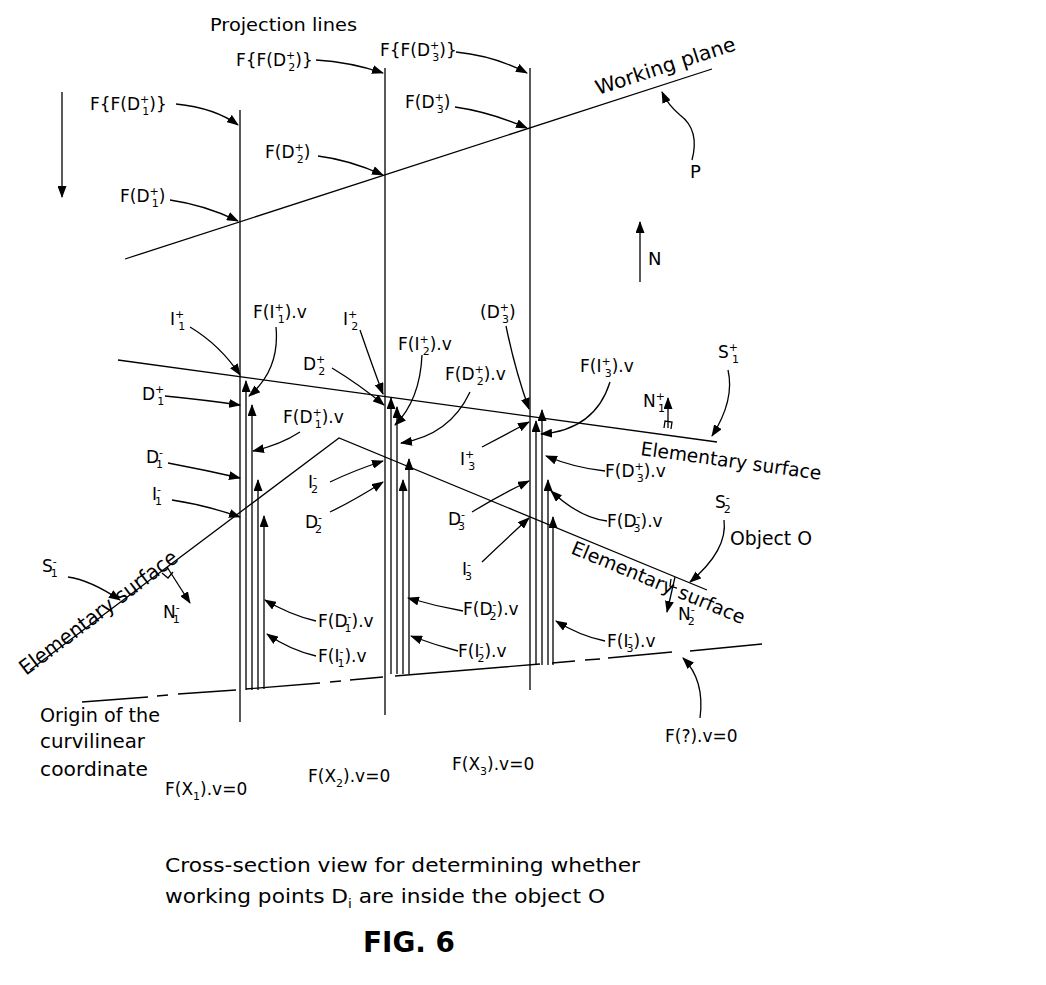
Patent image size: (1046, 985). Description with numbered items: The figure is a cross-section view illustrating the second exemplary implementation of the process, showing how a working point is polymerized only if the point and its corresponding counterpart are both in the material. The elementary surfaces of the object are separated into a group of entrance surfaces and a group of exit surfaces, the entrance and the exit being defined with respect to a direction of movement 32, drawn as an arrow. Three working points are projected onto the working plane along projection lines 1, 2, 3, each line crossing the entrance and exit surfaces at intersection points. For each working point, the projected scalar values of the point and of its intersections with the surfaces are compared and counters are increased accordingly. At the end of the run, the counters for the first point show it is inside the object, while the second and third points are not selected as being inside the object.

The direction of movement 32 is at (62, 138).
The first projection line through working point D1 1 is at (238, 692).
The second projection line through working point D2 2 is at (382, 682).
The third projection line through working point D3 3 is at (527, 673).